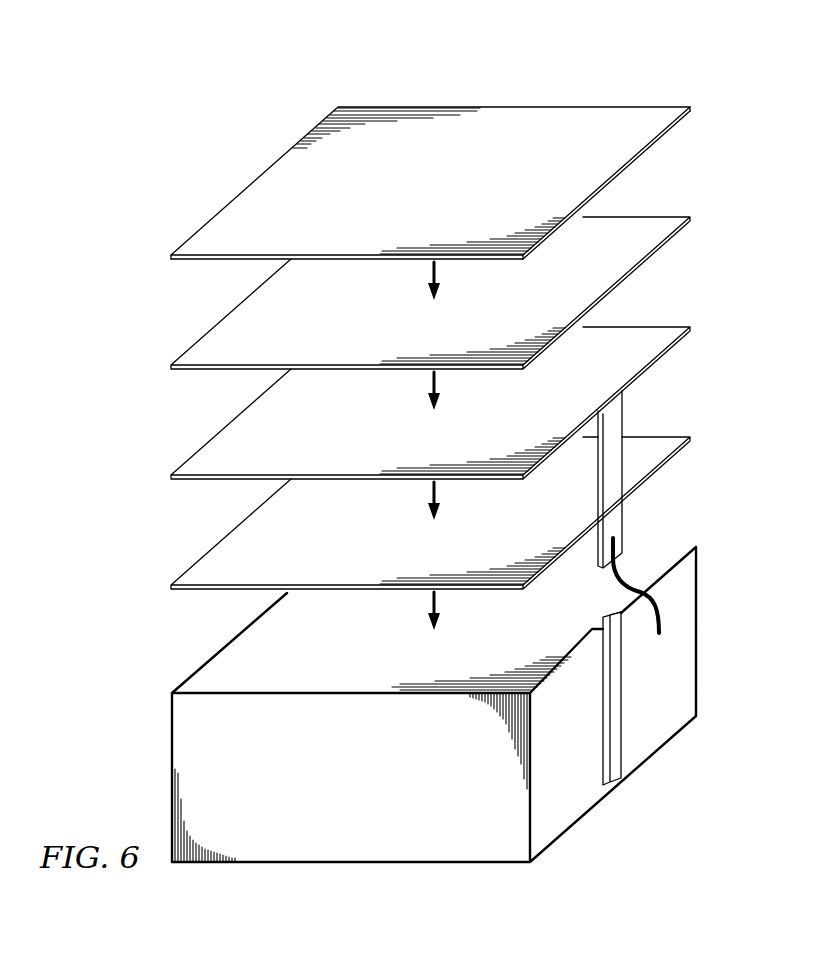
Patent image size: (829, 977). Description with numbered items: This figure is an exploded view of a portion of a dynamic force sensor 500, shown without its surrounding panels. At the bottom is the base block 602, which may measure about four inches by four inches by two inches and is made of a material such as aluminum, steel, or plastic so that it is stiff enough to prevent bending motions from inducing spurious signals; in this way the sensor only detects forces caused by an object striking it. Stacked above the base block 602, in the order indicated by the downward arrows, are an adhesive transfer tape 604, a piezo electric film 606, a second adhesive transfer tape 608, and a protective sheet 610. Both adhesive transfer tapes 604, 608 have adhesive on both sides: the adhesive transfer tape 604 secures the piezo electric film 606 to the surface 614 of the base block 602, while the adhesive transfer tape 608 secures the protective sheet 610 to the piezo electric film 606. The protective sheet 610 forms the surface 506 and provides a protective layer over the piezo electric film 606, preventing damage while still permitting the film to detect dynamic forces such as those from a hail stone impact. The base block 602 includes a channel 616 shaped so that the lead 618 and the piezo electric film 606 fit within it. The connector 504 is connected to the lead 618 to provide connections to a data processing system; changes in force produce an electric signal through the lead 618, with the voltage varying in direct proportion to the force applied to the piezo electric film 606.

The dynamic force sensor 500 is at (466, 433).
The protective sheet 610 is at (430, 158).
The surface 506 is at (432, 182).
The adhesive transfer tape 608 is at (430, 268).
The piezo electric film 606 is at (430, 379).
The adhesive transfer tape 604 is at (430, 488).
The lead 618 is at (643, 479).
The connector 504 is at (687, 585).
The base block 602 is at (449, 704).
The channel 616 is at (637, 713).
The surface 614 is at (371, 643).